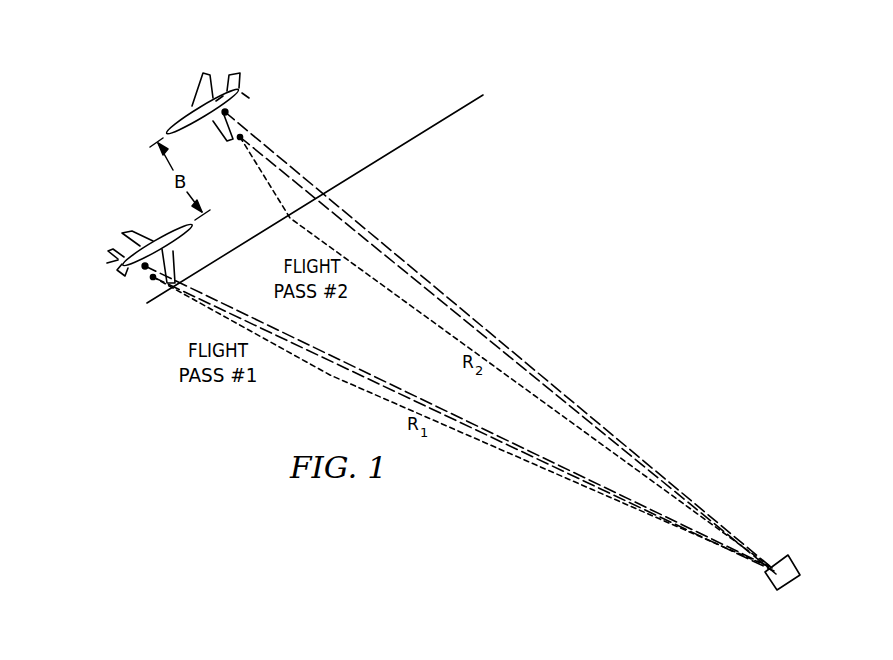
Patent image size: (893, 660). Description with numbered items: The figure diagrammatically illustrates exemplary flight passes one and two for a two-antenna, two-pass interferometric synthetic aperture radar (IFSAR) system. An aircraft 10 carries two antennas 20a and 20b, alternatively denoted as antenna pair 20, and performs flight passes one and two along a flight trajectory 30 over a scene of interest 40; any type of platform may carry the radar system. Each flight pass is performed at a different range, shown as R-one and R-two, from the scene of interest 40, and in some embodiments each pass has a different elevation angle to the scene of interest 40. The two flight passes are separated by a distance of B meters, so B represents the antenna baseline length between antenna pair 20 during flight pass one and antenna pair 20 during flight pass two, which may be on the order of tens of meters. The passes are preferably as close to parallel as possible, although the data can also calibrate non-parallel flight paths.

The aircraft 10 is at (184, 118).
The antenna pair 20 is at (196, 211).
The antenna 20a is at (228, 112).
The antenna 20b is at (244, 136).
The flight trajectory 30 is at (441, 121).
The scene of interest 40 is at (788, 584).